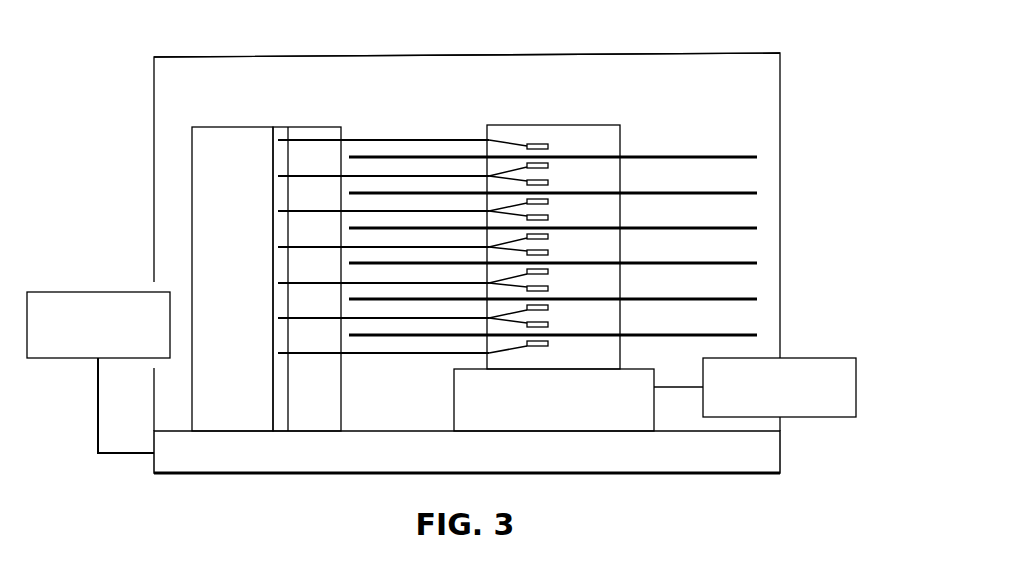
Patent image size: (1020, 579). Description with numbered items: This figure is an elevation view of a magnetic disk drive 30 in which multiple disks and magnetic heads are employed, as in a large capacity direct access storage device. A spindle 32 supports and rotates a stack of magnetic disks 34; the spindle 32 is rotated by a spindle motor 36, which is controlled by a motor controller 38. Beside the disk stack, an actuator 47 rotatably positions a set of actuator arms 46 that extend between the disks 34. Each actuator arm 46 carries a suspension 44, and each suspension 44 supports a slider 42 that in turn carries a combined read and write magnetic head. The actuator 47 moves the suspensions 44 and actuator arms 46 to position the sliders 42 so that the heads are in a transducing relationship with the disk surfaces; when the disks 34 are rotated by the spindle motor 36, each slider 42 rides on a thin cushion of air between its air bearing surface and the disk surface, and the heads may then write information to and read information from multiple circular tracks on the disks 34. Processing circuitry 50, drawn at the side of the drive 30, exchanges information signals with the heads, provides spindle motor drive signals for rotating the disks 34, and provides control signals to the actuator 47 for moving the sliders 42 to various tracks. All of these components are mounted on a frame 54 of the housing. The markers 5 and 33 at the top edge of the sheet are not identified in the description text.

The section line marker 5 is at (246, 9).
The magnetic disk drive 30 is at (680, 118).
The spindle 32 is at (607, 125).
The housing 33 is at (689, 54).
The magnetic disk 34 is at (757, 158).
The spindle motor 36 is at (568, 410).
The motor controller 38 is at (813, 417).
The slider 42 is at (548, 165).
The suspension 44 is at (522, 150).
The actuator arm 46 is at (480, 174).
The actuator 47 is at (222, 127).
The processing circuitry 50 is at (68, 292).
The frame 54 is at (205, 474).